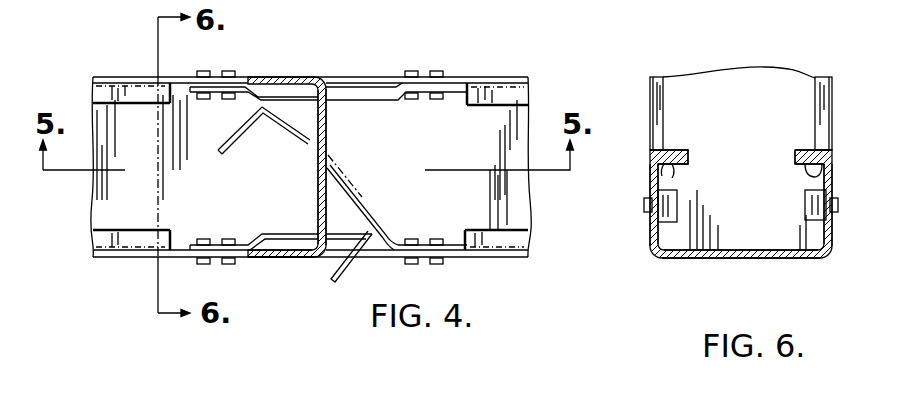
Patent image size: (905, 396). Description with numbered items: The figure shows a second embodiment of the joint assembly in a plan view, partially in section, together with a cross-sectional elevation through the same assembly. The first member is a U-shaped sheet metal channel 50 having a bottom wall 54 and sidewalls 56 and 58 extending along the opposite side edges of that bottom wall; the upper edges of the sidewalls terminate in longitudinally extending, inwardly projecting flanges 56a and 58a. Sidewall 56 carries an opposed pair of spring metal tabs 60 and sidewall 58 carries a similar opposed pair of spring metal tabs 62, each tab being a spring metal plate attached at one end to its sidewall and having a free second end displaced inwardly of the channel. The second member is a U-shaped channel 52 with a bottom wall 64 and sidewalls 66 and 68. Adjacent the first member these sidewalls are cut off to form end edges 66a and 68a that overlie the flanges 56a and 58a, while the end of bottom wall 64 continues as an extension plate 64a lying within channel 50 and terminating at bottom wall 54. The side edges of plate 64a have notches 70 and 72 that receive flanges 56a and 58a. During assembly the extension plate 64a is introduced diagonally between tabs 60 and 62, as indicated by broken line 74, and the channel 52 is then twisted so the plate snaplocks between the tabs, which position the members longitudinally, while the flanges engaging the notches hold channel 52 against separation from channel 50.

In FIG. 4, the U-shaped sheet metal channel 50 is at (460, 62).
In FIG. 6, the U-shaped sheet metal channel 50 is at (843, 192).
In FIG. 4, the U-shaped channel 52 is at (295, 68).
In FIG. 6, the U-shaped channel 52 is at (838, 96).
In FIG. 4, the bottom wall 54 is at (513, 205).
In FIG. 6, the bottom wall 54 is at (690, 258).
In FIG. 4, the sidewall 56 is at (500, 78).
In FIG. 6, the sidewall 56 is at (652, 230).
In FIG. 4, the inwardly projecting flange 56a is at (515, 96).
In FIG. 6, the inwardly projecting flange 56a is at (680, 77).
In FIG. 4, the sidewall 58 is at (494, 260).
In FIG. 6, the sidewall 58 is at (832, 232).
In FIG. 4, the inwardly projecting flange 58a is at (514, 242).
In FIG. 6, the inwardly projecting flange 58a is at (812, 148).
In FIG. 4, the spring metal tabs 60 is at (348, 95).
In FIG. 6, the spring metal tabs 60 is at (662, 193).
In FIG. 4, the spring metal tabs 62 is at (352, 233).
In FIG. 6, the spring metal tabs 62 is at (805, 202).
In FIG. 4, the bottom wall 64 is at (327, 140).
In FIG. 6, the bottom wall 64 is at (775, 78).
In FIG. 6, the extension plate 64a is at (775, 233).
In FIG. 4, the sidewall 66 is at (283, 77).
In FIG. 6, the sidewall 66 is at (653, 110).
In FIG. 6, the end edge 66a is at (665, 167).
In FIG. 4, the sidewall 68 is at (283, 258).
In FIG. 6, the sidewall 68 is at (832, 120).
In FIG. 6, the end edge 68a is at (832, 158).
In FIG. 6, the notch 70 is at (672, 157).
In FIG. 6, the notch 72 is at (797, 158).
In FIG. 4, the broken line 74 is at (378, 205).